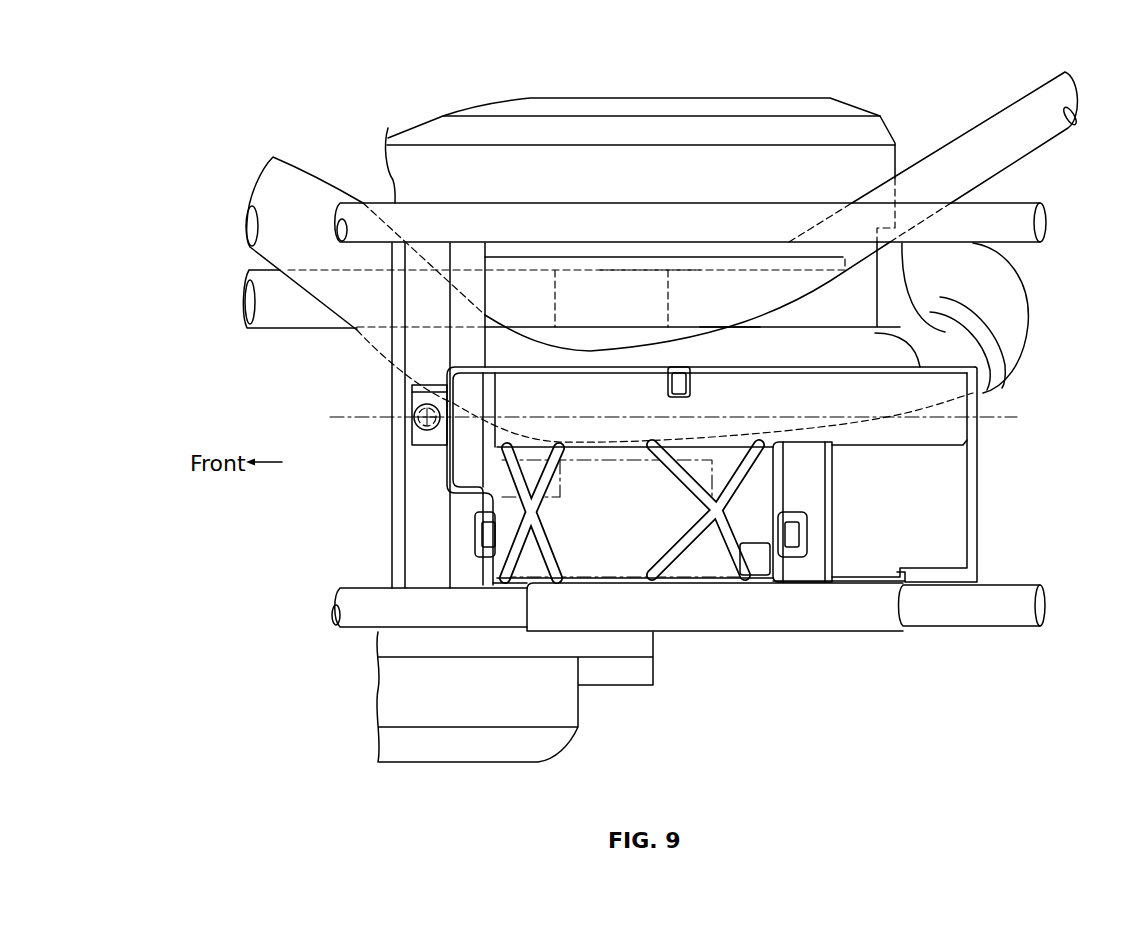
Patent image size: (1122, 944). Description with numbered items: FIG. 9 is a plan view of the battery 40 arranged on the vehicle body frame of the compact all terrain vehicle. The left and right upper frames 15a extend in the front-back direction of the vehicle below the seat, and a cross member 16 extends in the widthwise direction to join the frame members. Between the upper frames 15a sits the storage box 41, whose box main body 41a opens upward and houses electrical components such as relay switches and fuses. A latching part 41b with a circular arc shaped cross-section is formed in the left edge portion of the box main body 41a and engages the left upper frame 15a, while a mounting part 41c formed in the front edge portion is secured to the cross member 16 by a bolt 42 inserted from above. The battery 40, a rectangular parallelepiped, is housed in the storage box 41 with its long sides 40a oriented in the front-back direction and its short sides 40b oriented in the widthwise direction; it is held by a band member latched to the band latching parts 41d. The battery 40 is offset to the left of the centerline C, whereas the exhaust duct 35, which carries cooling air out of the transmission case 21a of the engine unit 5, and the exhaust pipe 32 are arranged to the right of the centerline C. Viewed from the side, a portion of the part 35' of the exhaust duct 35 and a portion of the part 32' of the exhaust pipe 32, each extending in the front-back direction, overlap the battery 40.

The engine unit 5 is at (436, 100).
The transmission case 21a is at (718, 97).
The upper frame 15a is at (787, 203).
The exhaust pipe 32 is at (662, 195).
The part of the exhaust pipe extending in the front-back direction 32' is at (650, 217).
The exhaust duct 35 is at (668, 342).
The part of the exhaust duct extending in the front-back direction 35' is at (730, 246).
The centerline C is at (352, 415).
The bolt 42 is at (423, 405).
The mounting part 41c is at (412, 430).
The storage box 41 is at (443, 478).
The box main body 41a is at (978, 493).
The latching part 41b is at (812, 632).
The band latching part 41d is at (478, 530).
The battery 40 is at (493, 466).
The long sides 40a is at (693, 578).
The short sides 40b is at (787, 460).
The cross member 16 is at (388, 542).